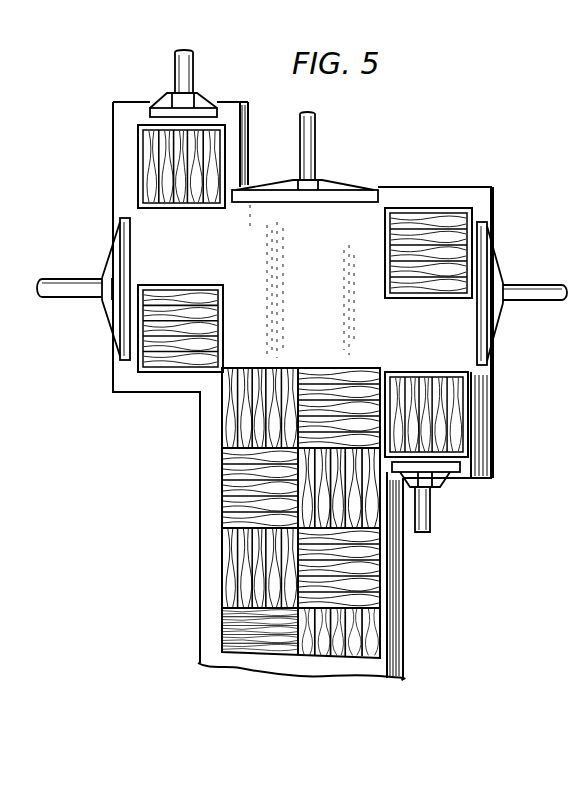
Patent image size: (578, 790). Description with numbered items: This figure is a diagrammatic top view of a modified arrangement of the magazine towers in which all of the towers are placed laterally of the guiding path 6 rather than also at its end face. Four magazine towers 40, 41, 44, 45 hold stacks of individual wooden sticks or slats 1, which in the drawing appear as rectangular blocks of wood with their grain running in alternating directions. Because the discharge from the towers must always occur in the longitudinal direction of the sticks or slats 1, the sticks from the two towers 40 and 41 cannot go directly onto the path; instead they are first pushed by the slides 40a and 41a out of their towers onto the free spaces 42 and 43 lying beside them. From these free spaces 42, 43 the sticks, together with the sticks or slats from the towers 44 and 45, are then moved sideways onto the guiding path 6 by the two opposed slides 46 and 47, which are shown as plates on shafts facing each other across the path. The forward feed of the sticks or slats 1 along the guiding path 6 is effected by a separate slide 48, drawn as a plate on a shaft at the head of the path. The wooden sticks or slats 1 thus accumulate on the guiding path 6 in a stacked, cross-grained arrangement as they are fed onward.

The wooden sticks or slats 1 is at (370, 627).
The guiding path 6 is at (202, 524).
The magazine tower 40 is at (138, 165).
The slide 40a is at (165, 108).
The magazine tower 41 is at (467, 418).
The slide 41a is at (445, 472).
The free space 42 is at (160, 245).
The free space 43 is at (443, 335).
The magazine tower 44 is at (163, 372).
The magazine tower 45 is at (437, 208).
The slide 46 is at (122, 325).
The slide 47 is at (480, 262).
The separate slide 48 is at (352, 197).